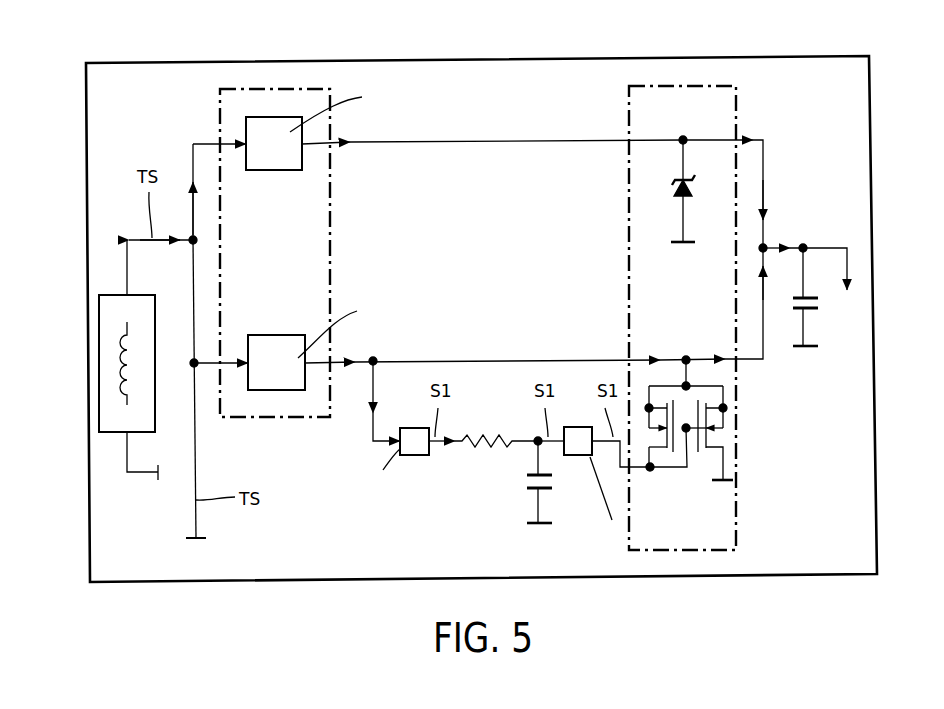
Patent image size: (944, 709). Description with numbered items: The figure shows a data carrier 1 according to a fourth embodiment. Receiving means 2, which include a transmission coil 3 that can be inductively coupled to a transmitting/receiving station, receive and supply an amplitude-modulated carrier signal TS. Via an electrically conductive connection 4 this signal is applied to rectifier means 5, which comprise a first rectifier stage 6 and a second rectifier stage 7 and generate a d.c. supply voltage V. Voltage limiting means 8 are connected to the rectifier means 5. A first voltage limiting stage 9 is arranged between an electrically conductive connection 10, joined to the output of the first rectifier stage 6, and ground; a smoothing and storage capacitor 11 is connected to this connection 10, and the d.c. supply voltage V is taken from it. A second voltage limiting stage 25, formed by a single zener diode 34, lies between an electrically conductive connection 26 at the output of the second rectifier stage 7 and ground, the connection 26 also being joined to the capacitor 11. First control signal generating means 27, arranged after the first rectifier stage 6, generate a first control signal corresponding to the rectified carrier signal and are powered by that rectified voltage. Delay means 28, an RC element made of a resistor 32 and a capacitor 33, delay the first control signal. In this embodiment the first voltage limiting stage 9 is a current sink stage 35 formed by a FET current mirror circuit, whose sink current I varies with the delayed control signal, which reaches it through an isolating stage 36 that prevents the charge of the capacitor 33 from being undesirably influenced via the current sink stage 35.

The data carrier 1 is at (209, 584).
The receiving means 2 is at (113, 438).
The transmission coil 3 is at (130, 382).
The electrically conductive connection 4 is at (194, 275).
The rectifier means 5 is at (218, 115).
The first rectifier stage 6 is at (288, 348).
The second rectifier stage 7 is at (288, 172).
The voltage limiting means 8 is at (738, 110).
The first voltage limiting stage 9 is at (688, 450).
The electrically conductive connection 10 is at (569, 359).
The capacitor 11 is at (811, 312).
The second voltage limiting stage 25 is at (641, 203).
The electrically conductive connection 26 is at (537, 140).
The first control signal generating means 27 is at (415, 457).
The delay means 28 is at (488, 466).
The resistor 32 is at (483, 433).
The capacitor 33 is at (532, 494).
The zener diode 34 is at (672, 185).
The current sink stage 35 is at (667, 474).
The isolating stage 36 is at (576, 457).